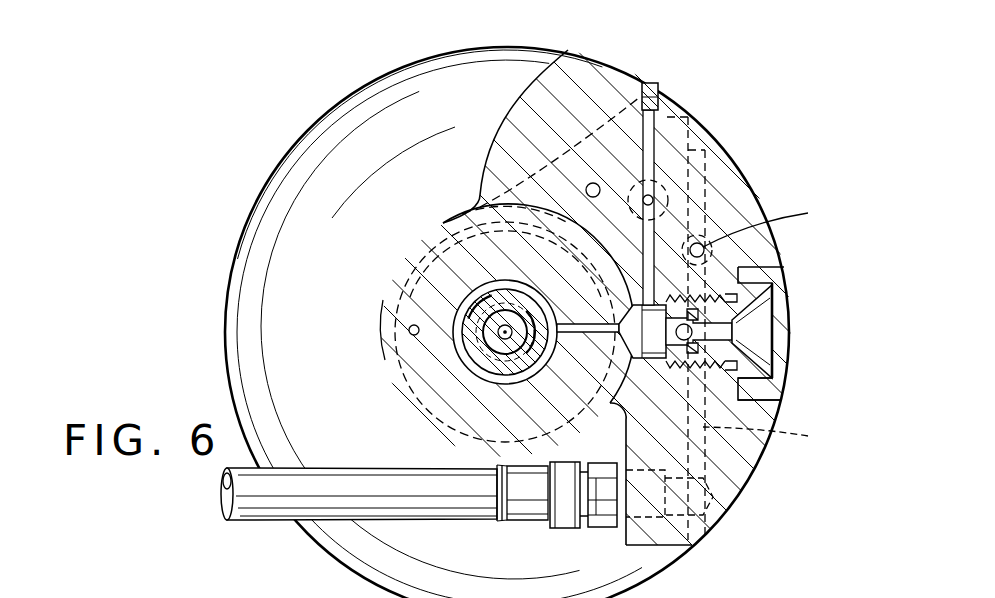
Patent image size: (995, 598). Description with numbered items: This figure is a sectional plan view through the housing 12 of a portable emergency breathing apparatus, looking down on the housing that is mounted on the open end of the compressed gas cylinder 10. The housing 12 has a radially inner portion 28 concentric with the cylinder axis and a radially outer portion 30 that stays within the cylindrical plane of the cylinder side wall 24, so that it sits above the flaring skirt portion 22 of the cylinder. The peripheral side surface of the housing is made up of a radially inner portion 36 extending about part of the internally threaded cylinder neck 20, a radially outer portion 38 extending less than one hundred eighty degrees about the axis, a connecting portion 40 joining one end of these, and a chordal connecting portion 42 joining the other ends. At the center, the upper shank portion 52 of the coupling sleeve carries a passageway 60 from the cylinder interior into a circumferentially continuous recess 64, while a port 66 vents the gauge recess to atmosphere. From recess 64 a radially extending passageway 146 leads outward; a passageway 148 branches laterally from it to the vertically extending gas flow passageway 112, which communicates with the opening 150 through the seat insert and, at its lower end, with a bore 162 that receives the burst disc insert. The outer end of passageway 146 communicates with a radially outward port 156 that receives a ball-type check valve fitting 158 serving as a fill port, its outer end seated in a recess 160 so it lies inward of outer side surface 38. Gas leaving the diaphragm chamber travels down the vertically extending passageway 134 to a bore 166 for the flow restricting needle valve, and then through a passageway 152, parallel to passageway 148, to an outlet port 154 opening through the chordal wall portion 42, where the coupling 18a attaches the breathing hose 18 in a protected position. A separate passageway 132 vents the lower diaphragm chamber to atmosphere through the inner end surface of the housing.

The cylinder 10 is at (248, 165).
The housing 12 is at (782, 137).
The breathing hose 18 is at (468, 532).
The coupling 18a is at (568, 532).
The neck portion 20 is at (395, 380).
The skirt portion 22 is at (466, 78).
The cylindrical side wall 24 is at (397, 93).
The radially inner portion 28 is at (434, 270).
The radially outer portion 30 is at (600, 85).
The radially inner portion of peripheral side surface 36 is at (383, 337).
The radially outer portion of peripheral side surface 38 is at (780, 261).
The connecting portion 40 is at (518, 90).
The chordal connecting portion 42 is at (626, 535).
The upper shank portion 52 is at (460, 347).
The passageway 60 is at (531, 372).
The recess 64 is at (496, 373).
The port 66 is at (410, 326).
The gas flow passageway 112 is at (665, 195).
The passageway 132 is at (586, 188).
The passageway 134 is at (777, 221).
The radially extending passageway 146 is at (538, 243).
The passageway 148 is at (643, 142).
The opening 150 is at (643, 197).
The passageway 152 is at (777, 436).
The outlet port 154 is at (678, 541).
The port 156 is at (706, 373).
The ball-type check valve fitting 158 is at (760, 294).
The recess 160 is at (768, 398).
The bore 162 is at (636, 212).
The bore 166 is at (705, 250).